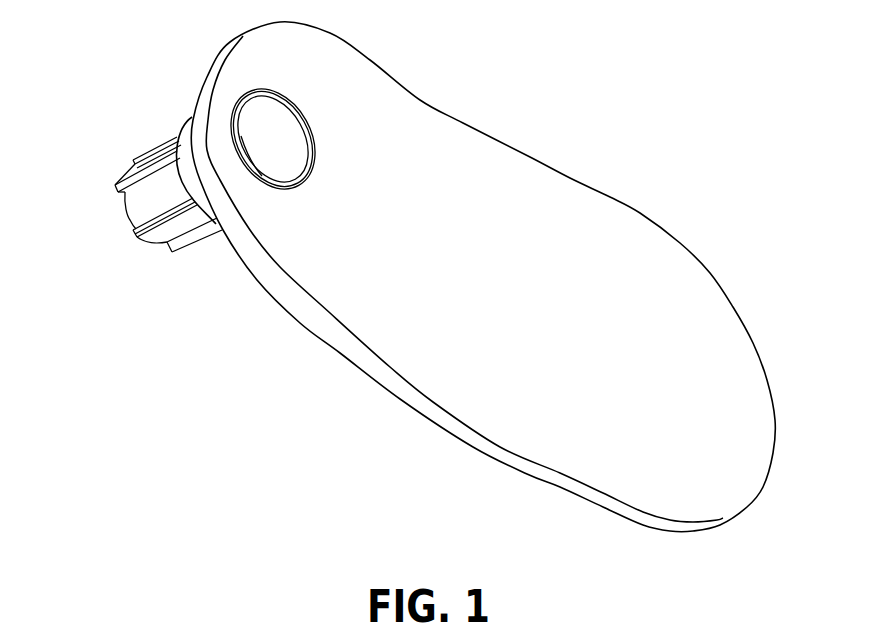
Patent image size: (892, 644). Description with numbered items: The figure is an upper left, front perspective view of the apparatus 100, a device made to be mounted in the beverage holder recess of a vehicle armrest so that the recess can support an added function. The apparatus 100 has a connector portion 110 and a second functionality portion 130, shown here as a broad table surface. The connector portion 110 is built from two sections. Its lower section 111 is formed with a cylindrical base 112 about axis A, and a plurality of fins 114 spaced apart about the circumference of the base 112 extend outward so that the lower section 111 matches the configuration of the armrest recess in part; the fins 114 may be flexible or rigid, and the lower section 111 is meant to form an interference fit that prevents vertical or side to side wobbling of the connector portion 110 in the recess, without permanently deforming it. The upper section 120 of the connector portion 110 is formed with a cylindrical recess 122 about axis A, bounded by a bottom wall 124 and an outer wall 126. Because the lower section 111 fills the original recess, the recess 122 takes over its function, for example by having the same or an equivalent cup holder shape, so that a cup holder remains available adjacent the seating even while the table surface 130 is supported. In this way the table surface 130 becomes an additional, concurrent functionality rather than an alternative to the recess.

The apparatus 100 is at (708, 203).
The connector portion 110 is at (217, 287).
The lower section 111 is at (127, 203).
The cylindrical base 112 is at (163, 237).
The fins 114 is at (192, 240).
The upper section 120 is at (307, 125).
The cylindrical recess 122 is at (286, 152).
The bottom wall 124 is at (249, 153).
The outer wall 126 is at (180, 138).
The second functionality portion 130 is at (630, 332).